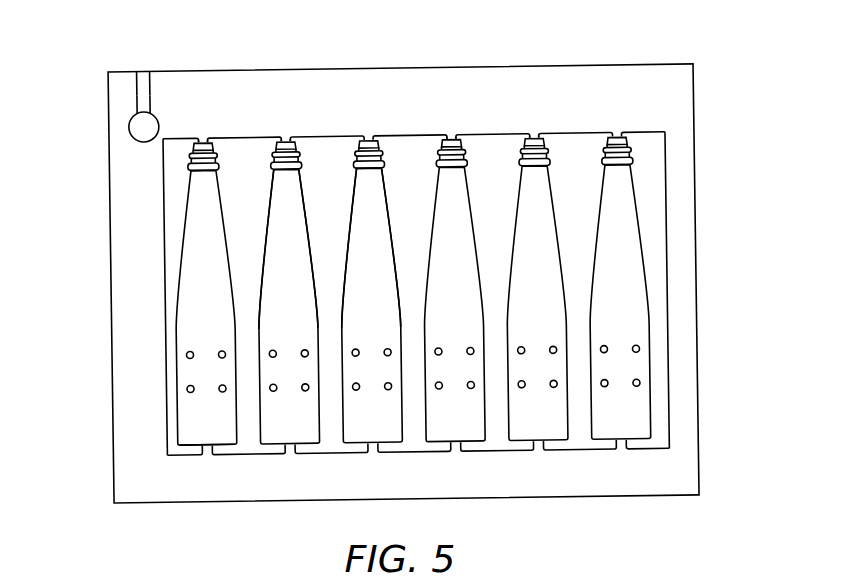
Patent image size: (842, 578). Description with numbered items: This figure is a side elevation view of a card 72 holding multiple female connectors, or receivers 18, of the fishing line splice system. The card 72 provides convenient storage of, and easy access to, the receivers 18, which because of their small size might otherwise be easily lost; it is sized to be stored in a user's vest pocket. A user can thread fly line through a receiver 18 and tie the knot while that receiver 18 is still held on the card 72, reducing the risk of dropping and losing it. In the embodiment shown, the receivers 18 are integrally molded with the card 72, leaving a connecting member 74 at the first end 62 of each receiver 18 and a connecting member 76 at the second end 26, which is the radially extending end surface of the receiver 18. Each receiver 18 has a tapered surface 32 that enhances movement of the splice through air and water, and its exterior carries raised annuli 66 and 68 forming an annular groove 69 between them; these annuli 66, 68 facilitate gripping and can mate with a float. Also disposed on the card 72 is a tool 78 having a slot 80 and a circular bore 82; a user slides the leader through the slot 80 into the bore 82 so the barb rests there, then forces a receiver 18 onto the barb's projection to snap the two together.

The female connector or receiver 18 is at (382, 296).
The radially extending end surface (second end) 26 is at (188, 442).
The tapered surface 32 is at (344, 216).
The first end of receiver 62 is at (663, 180).
The exterior raised annulus 66 is at (355, 154).
The exterior raised annulus 68 is at (269, 166).
The annular groove 69 is at (522, 162).
The card 72 is at (416, 82).
The connecting member 74 is at (619, 140).
The connecting member 76 is at (618, 448).
The tool 78 is at (120, 124).
The slot 80 is at (140, 89).
The circular bore 82 is at (140, 137).